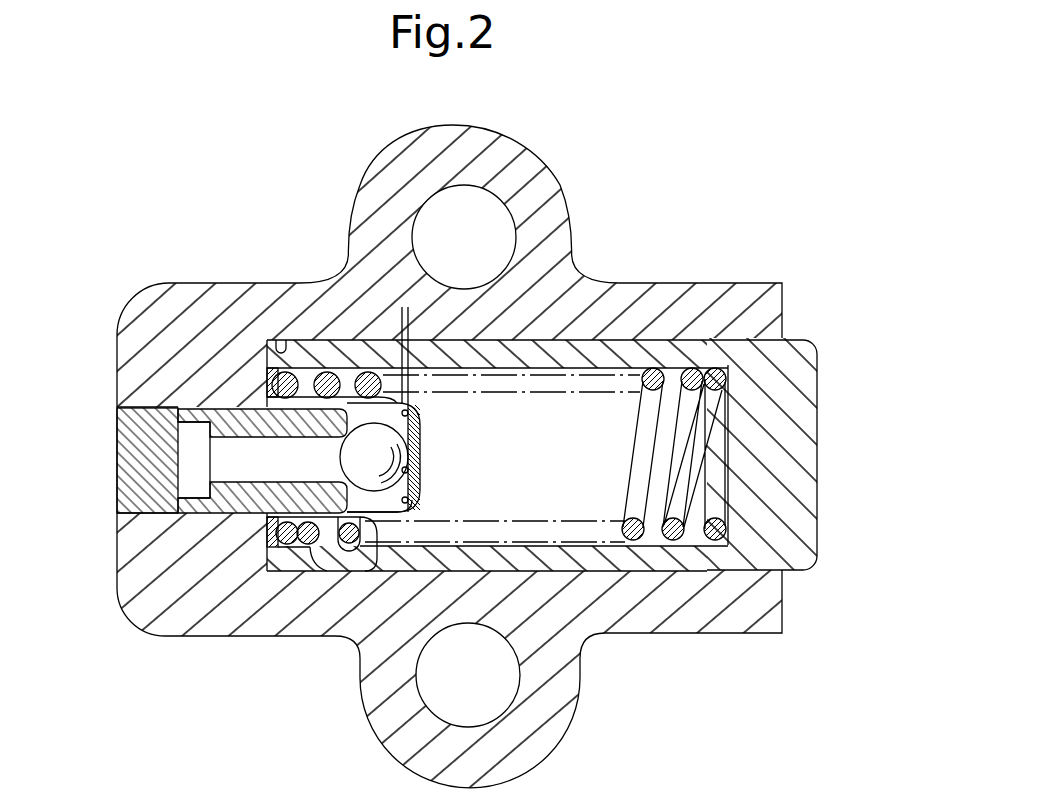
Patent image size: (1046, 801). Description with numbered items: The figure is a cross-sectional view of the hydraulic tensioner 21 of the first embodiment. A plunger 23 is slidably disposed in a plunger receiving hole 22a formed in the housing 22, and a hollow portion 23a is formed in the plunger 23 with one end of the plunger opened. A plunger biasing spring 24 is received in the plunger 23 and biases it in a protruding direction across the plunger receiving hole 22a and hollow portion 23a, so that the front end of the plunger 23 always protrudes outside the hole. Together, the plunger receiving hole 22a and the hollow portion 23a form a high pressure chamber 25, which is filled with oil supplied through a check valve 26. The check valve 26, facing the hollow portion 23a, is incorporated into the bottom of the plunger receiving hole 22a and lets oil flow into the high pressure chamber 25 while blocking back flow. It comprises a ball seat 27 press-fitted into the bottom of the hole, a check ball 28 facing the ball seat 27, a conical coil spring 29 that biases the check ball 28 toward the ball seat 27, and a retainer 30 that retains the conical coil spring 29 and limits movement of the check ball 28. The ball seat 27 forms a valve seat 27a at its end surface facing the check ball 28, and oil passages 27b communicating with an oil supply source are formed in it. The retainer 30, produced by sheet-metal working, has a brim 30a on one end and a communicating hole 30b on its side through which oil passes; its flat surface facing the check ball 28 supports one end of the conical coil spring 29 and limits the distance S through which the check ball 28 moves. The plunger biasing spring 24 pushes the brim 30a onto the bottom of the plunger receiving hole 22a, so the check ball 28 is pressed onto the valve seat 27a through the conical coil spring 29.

The hydraulic tensioner 21 is at (614, 176).
The housing 22 is at (729, 283).
The plunger receiving hole 22a is at (277, 340).
The plunger 23 is at (818, 386).
The hollow portion 23a is at (602, 403).
The plunger biasing spring 24 is at (673, 540).
The high pressure chamber 25 is at (590, 444).
The check valve 26 is at (447, 478).
The ball seat 27 is at (128, 425).
The valve seat 27a is at (343, 457).
The oil passages 27b is at (190, 447).
The check ball 28 is at (388, 446).
The conical coil spring 29 is at (410, 512).
The retainer 30 is at (420, 420).
The brim 30a is at (267, 532).
The communicating hole 30b is at (375, 512).
The distance S is at (414, 316).